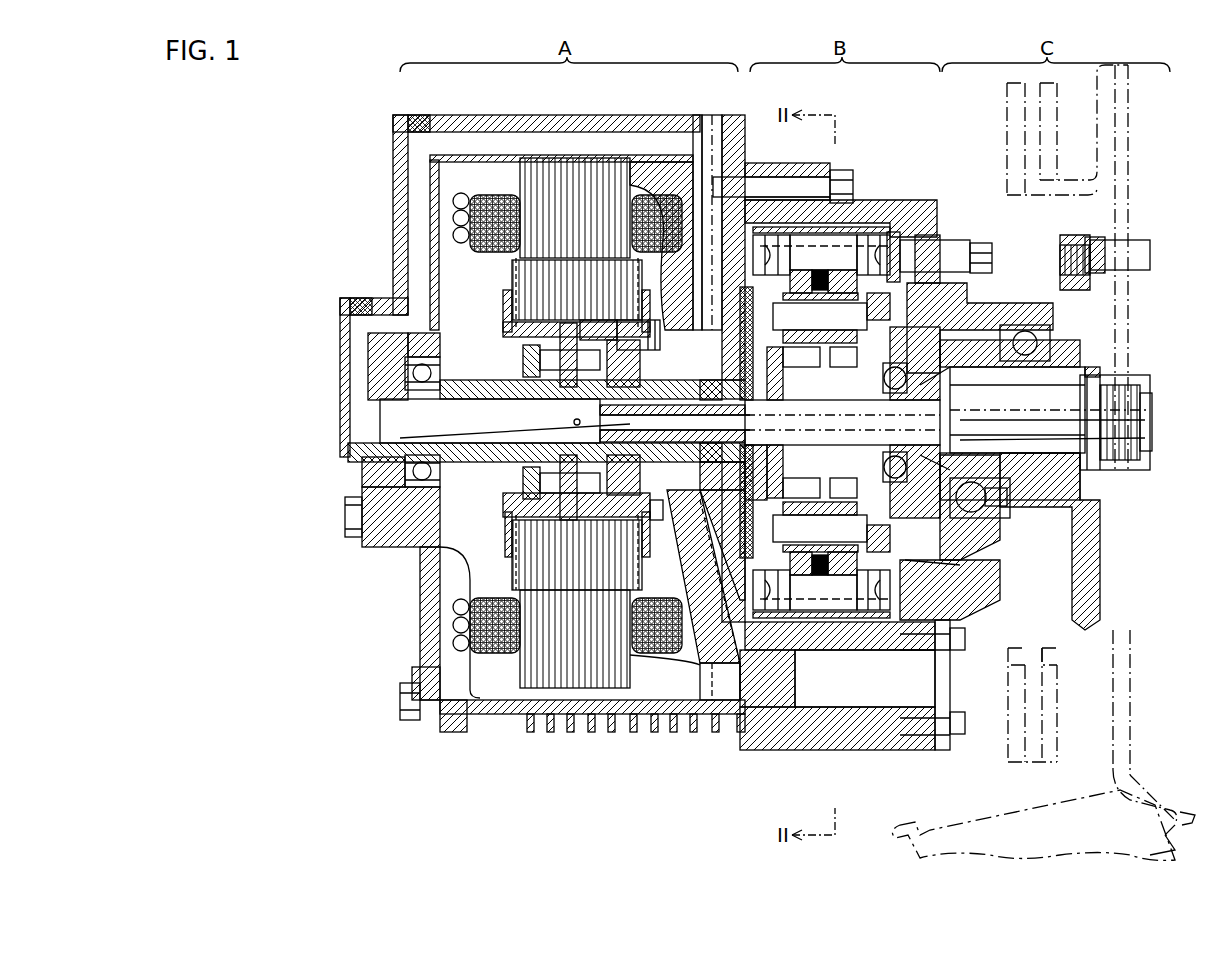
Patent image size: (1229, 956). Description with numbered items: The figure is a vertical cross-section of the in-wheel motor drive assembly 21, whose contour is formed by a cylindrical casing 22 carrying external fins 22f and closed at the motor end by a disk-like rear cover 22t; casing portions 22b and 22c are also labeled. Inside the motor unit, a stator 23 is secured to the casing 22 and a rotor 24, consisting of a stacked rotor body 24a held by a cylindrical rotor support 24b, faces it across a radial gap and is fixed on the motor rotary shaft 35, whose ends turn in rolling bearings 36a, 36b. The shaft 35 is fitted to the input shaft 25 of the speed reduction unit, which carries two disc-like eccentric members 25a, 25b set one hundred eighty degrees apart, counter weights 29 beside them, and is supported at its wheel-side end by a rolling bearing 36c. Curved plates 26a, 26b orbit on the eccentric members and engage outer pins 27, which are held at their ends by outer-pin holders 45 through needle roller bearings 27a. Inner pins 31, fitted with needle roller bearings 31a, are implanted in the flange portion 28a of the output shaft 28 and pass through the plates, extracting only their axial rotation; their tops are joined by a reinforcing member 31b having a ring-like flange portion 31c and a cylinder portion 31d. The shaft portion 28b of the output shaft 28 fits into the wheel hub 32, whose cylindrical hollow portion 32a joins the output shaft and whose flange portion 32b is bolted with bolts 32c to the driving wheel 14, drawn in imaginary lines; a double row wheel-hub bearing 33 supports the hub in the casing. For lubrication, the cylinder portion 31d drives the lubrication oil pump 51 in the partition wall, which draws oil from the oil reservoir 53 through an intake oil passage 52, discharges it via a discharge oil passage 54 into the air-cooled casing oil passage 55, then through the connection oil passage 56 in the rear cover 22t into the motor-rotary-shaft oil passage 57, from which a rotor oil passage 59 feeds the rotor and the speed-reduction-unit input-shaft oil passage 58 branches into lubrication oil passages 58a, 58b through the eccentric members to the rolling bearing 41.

The driving wheel 14 is at (1135, 715).
The in-wheel motor drive assembly 21 is at (392, 110).
The casing 22 is at (460, 735).
The housing flange 22b is at (885, 215).
The housing boss 22c is at (960, 250).
The fins 22f is at (550, 735).
The rear cover 22t is at (428, 735).
The stator 23 is at (525, 665).
The rotor 24 is at (362, 570).
The rotor body 24a is at (520, 548).
The rotor support 24b is at (520, 517).
The input shaft 25 is at (695, 718).
The eccentric member 25a is at (1085, 387).
The eccentric member 25b is at (1080, 366).
The curved plate 26a is at (805, 620).
The curved plate 26b is at (872, 612).
The outer pins 27 is at (815, 255).
The needle roller bearings 27a is at (780, 660).
The output shaft 28 is at (950, 540).
The flange portion 28a is at (905, 562).
The shaft portion 28b is at (1150, 405).
The counter weights 29 is at (772, 240).
The inner pins 31 is at (843, 625).
The needle roller bearings 31a is at (855, 620).
The reinforcing member 31b is at (781, 88).
The flange portion 31c is at (747, 185).
The cylinder portion 31d is at (727, 160).
The wheel hub 32 is at (1130, 497).
The cylindrical hollow portion 32a is at (1000, 325).
The flange portion 32b is at (1080, 238).
The bolts 32c is at (1155, 252).
The wheel-hub bearing 33 is at (1025, 522).
The motor rotary shaft 35 is at (385, 480).
The rolling bearing 36a is at (358, 364).
The rolling bearing 36b is at (660, 325).
The rolling bearing 36c is at (935, 240).
The rolling bearing 41 is at (792, 640).
The outer-pin holders 45 is at (765, 612).
The lubrication oil pump 51 is at (712, 720).
The intake oil passage 52 is at (730, 700).
The oil reservoir 53 is at (925, 681).
The discharge oil passage 54 is at (705, 190).
The casing oil passage 55 is at (617, 145).
The connection oil passage 56 is at (420, 211).
The motor-rotary-shaft oil passage 57 is at (400, 416).
The speed-reduction-unit input-shaft oil passage 58 is at (610, 432).
The lubrication oil passage 58a is at (1040, 421).
The lubrication oil passage 58b is at (1080, 441).
The rotor oil passage 59 is at (395, 528).